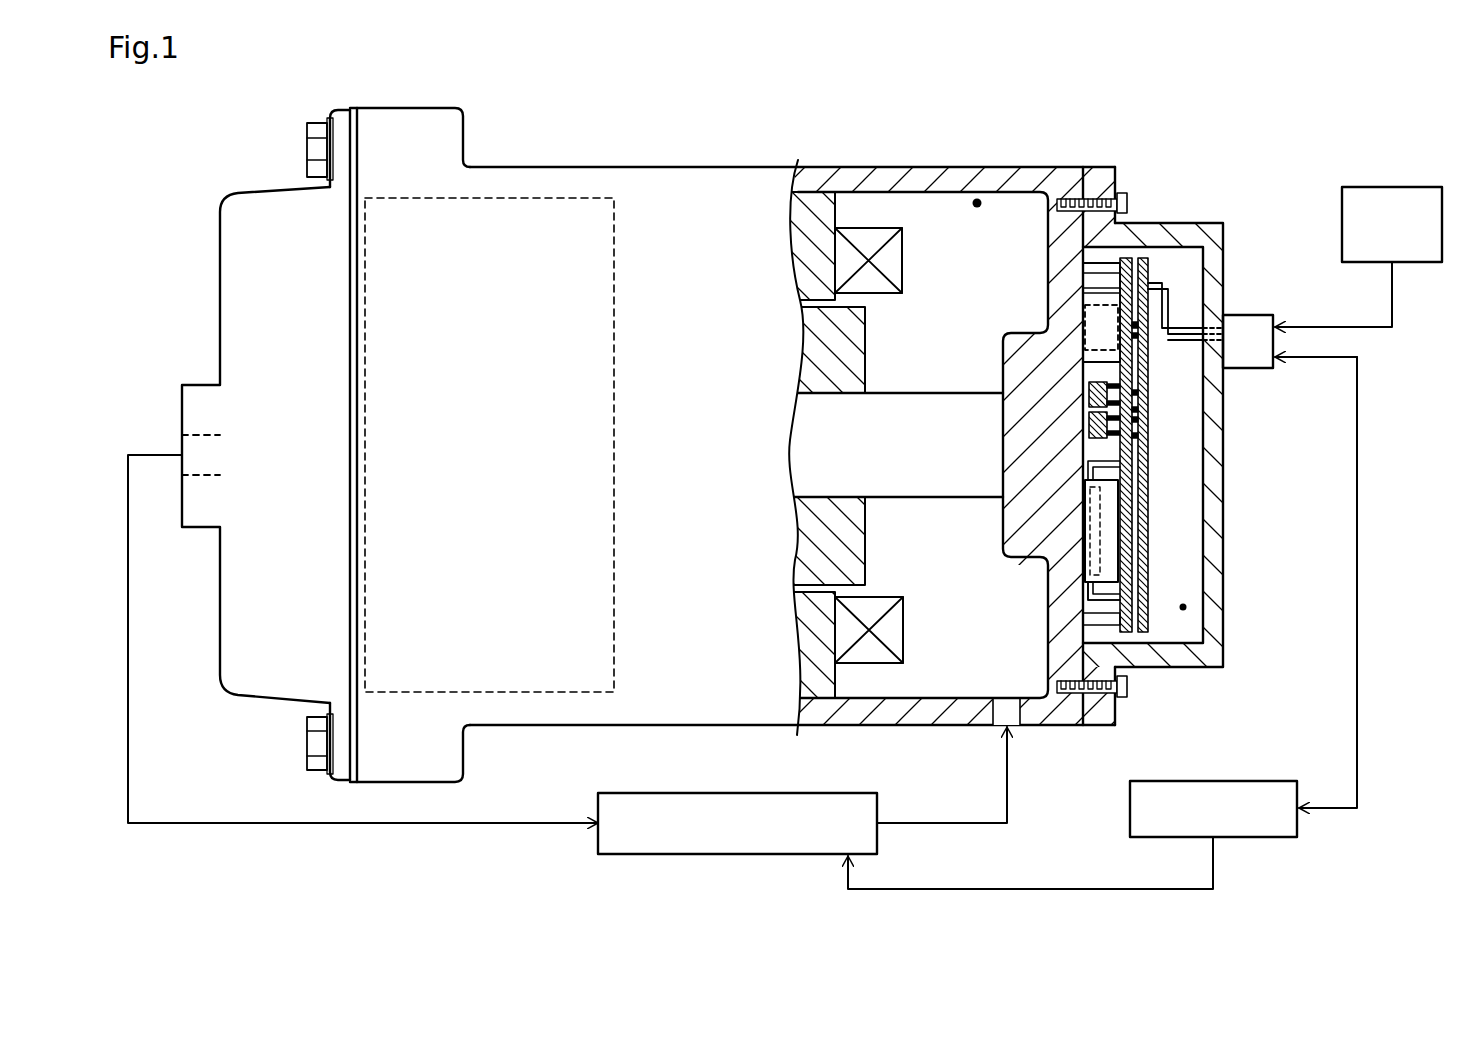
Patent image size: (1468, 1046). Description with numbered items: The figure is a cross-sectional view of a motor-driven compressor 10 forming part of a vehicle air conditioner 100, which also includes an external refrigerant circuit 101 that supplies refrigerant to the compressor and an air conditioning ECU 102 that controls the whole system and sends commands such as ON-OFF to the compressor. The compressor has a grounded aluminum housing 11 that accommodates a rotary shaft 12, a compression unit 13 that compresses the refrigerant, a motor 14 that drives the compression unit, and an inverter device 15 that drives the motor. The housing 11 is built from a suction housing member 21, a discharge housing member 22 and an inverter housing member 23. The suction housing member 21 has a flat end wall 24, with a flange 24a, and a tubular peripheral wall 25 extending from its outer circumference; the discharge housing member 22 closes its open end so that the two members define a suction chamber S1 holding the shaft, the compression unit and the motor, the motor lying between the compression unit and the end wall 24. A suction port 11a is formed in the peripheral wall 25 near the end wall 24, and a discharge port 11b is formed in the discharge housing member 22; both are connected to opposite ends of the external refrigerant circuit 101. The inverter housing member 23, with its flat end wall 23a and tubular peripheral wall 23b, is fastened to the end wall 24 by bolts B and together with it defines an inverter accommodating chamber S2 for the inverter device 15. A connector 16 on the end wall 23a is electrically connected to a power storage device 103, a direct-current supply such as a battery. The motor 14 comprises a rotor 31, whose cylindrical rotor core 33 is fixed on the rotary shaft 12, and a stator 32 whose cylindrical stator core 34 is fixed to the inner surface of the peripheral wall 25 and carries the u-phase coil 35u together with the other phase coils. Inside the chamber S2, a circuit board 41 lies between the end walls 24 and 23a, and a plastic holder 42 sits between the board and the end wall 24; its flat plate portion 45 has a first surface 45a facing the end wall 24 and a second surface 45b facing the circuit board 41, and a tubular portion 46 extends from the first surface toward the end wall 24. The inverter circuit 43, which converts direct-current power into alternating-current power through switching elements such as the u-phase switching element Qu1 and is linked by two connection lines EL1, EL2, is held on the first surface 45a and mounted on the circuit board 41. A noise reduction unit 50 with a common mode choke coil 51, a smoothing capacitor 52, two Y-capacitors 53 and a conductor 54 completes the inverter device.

The motor-driven compressor 10 is at (240, 180).
The housing 11 is at (590, 166).
The suction port 11a is at (1008, 700).
The discharge port 11b is at (182, 455).
The rotary shaft 12 is at (800, 438).
The compression unit 13 is at (524, 198).
The motor 14 is at (830, 190).
The inverter device 15 is at (1104, 403).
The connector 16 is at (1263, 313).
The suction housing member 21 is at (402, 108).
The discharge housing member 22 is at (348, 106).
The inverter housing member 23 is at (1225, 240).
The end wall 23a is at (1212, 525).
The peripheral wall 23b is at (1172, 660).
The end wall 24 is at (1057, 213).
The flange portion of end wall 24a is at (1097, 245).
The peripheral wall 25 is at (922, 180).
The rotor 31 is at (836, 446).
The stator 32 is at (759, 445).
The rotor core 33 is at (812, 348).
The stator core 34 is at (795, 236).
The u-phase coil 35u is at (845, 268).
The circuit board 41 is at (1148, 547).
The holder 42 is at (1132, 483).
The inverter circuit 43 is at (1085, 530).
The plate portion 45 is at (1127, 510).
The first surface 45a is at (1085, 615).
The second surface 45b is at (1100, 575).
The tubular portion 46 is at (1090, 372).
The noise reduction unit 50 is at (1065, 432).
The common mode choke coil 51 is at (1085, 325).
The smoothing capacitor 52 is at (1120, 435).
The Y-capacitors 53 is at (1088, 395).
The conductor 54 is at (1101, 327).
The vehicle air conditioner 100 is at (1275, 150).
The external refrigerant circuit 101 is at (832, 793).
The air conditioning ECU 102 is at (1237, 781).
The power storage device 103 is at (1411, 187).
The bolts B is at (1127, 203).
The suction chamber S1 is at (977, 200).
The inverter accommodating chamber S2 is at (1183, 607).
The connection line EL1 is at (1185, 345).
The connection line EL2 is at (1180, 330).
The u-phase switching element Qu1 is at (1055, 565).